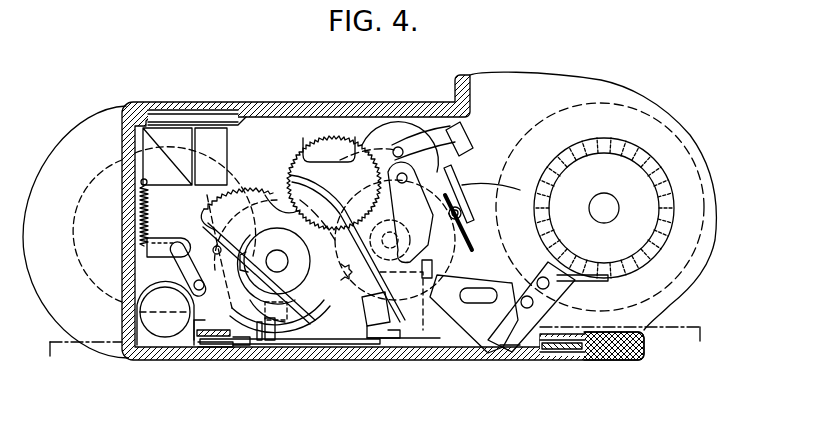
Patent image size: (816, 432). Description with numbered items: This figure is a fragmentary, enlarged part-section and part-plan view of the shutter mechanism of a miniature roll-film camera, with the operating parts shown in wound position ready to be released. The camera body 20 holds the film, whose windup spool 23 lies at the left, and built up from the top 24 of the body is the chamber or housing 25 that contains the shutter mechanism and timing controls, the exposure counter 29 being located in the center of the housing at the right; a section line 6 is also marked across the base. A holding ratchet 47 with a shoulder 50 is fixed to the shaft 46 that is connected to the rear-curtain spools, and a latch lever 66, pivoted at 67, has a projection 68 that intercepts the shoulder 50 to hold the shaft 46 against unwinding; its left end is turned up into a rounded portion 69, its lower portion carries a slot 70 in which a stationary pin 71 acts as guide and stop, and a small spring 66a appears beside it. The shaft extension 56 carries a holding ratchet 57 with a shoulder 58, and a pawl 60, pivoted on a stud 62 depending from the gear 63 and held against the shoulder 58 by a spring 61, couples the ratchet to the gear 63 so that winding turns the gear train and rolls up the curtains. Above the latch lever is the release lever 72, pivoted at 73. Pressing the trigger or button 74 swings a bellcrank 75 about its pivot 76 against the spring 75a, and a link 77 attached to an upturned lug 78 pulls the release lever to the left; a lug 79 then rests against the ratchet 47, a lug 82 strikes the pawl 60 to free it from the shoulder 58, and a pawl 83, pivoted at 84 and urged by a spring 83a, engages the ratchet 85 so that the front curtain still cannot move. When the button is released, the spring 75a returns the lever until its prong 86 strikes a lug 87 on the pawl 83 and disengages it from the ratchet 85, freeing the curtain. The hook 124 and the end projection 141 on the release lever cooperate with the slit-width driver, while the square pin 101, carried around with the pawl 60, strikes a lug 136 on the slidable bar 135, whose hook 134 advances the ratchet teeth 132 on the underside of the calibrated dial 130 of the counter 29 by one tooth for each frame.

The camera body 20 is at (99, 112).
The windup spool 23 is at (78, 210).
The top of the camera body 24 is at (70, 134).
The chamber or housing 25 is at (396, 102).
The exposure recorder or counter 29 is at (672, 185).
The shaft 46 is at (455, 190).
The holding ratchet 47 is at (458, 242).
The shoulder 50 is at (460, 235).
The shaft extension 56 is at (282, 185).
The holding ratchet 57 is at (250, 200).
The shoulder 58 is at (218, 240).
The pawl 60 is at (258, 336).
The spring 61 is at (219, 305).
The pivot 62 is at (275, 300).
The gear 63 is at (225, 210).
The latch lever 66 is at (305, 325).
The spring 66a is at (147, 208).
The pivot 67 is at (405, 176).
The shoulder or projection 68 is at (462, 213).
The rounded portion 69 is at (186, 240).
The slot 70 is at (180, 272).
The stationary pin 71 is at (122, 277).
The release lever 72 is at (338, 165).
The pivot 73 is at (395, 150).
The operating button or trigger 74 is at (160, 320).
The bellcrank 75 is at (200, 335).
The spring 75a is at (205, 340).
The pivot 76 is at (210, 338).
The link 77 is at (240, 337).
The upturned lug 78 is at (400, 345).
The lug 79 is at (450, 340).
The lug 82 is at (378, 340).
The pawl 83 is at (455, 170).
The spring 83a is at (495, 190).
The pivot 84 is at (462, 205).
The ratchet 85 is at (310, 140).
The prong 86 is at (468, 140).
The lug 87 is at (470, 130).
The square pin 101 is at (283, 320).
The hook 124 is at (545, 283).
The calibrated dial 130 is at (655, 253).
The ratchet teeth 132 is at (640, 275).
The hook 134 is at (600, 281).
The slidable bar 135 is at (490, 350).
The lug 136 is at (268, 336).
The end projection 141 is at (300, 146).
The section line 6- 6 is at (372, 356).